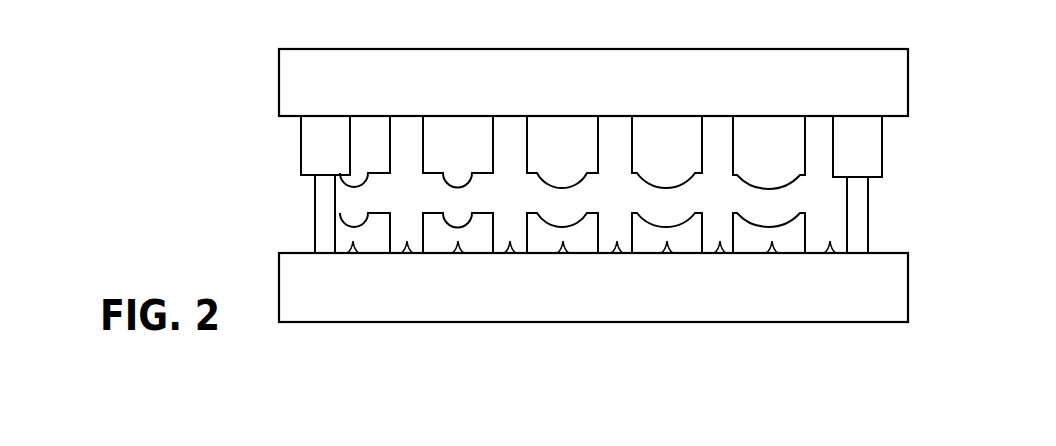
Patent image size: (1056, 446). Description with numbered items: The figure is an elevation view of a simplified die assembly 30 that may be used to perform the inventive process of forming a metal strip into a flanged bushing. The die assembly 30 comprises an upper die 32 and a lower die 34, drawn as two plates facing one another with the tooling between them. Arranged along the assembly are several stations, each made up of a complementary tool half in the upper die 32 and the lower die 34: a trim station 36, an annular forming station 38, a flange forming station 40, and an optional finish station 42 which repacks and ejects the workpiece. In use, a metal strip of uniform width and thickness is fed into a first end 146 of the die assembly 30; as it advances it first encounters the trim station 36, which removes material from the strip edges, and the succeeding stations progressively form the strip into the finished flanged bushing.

The die assembly 30 is at (962, 34).
The upper die 32 is at (890, 80).
The lower die 34 is at (892, 292).
The first end 146 is at (908, 272).
The trim station 36 is at (772, 281).
The annular forming station 38 is at (667, 281).
The flange forming station 40 is at (565, 281).
The finish station 42 is at (459, 281).